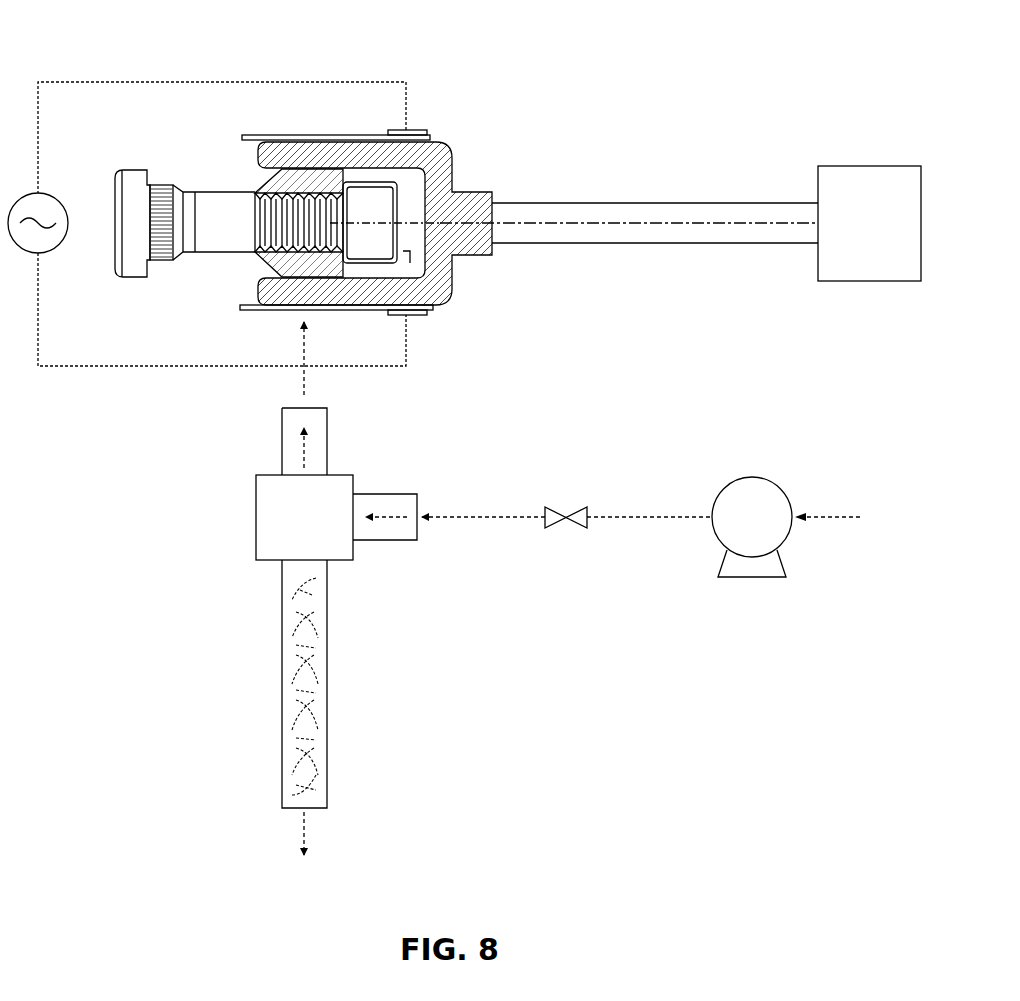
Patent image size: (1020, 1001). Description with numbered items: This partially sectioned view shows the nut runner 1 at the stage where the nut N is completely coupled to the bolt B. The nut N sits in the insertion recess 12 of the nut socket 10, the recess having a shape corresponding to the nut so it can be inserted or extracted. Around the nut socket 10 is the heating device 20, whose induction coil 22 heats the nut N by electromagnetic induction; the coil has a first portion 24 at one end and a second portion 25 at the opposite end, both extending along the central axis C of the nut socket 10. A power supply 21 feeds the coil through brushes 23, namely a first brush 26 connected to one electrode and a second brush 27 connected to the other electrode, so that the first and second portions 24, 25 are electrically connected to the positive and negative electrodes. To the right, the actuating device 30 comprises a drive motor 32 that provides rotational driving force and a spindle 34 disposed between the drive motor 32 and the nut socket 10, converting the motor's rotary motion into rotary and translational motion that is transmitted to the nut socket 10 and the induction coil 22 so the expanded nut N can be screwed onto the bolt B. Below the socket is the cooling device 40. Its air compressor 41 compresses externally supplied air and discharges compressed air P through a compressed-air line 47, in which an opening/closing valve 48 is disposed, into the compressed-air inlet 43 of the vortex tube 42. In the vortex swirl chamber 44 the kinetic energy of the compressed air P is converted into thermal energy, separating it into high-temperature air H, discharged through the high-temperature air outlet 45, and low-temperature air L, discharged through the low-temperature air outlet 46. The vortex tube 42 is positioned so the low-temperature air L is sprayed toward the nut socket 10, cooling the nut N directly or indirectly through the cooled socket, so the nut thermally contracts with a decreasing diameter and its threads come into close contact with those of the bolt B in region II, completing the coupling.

The nut runner 1 is at (58, 38).
The nut socket 10 is at (437, 140).
The insertion recess 12 is at (446, 300).
The heating device 20 is at (252, 72).
The power supply 21 is at (30, 255).
The induction coil 22 is at (290, 132).
The brushes 23 is at (393, 126).
The first portion 24 is at (345, 135).
The second portion 25 is at (351, 312).
The first brush 26 is at (418, 130).
The second brush 27 is at (415, 318).
The actuating device 30 is at (629, 207).
The drive motor 32 is at (868, 168).
The spindle 34 is at (648, 245).
The cooling device 40 is at (518, 574).
The air compressor 41 is at (715, 540).
The vortex tube 42 is at (302, 653).
The compressed-air inlet 43 is at (417, 542).
The vortex swirl chamber 44 is at (256, 563).
The high-temperature air outlet 45 is at (281, 810).
The low-temperature air outlet 46 is at (282, 410).
The compressed-air line 47 is at (630, 520).
The opening/closing valve 48 is at (557, 508).
The bolt B is at (210, 208).
The nut N is at (257, 270).
The central axis C is at (557, 222).
The low-temperature air L is at (300, 390).
The compressed air P is at (390, 517).
The high-temperature air H is at (308, 826).
The region II is at (257, 187).